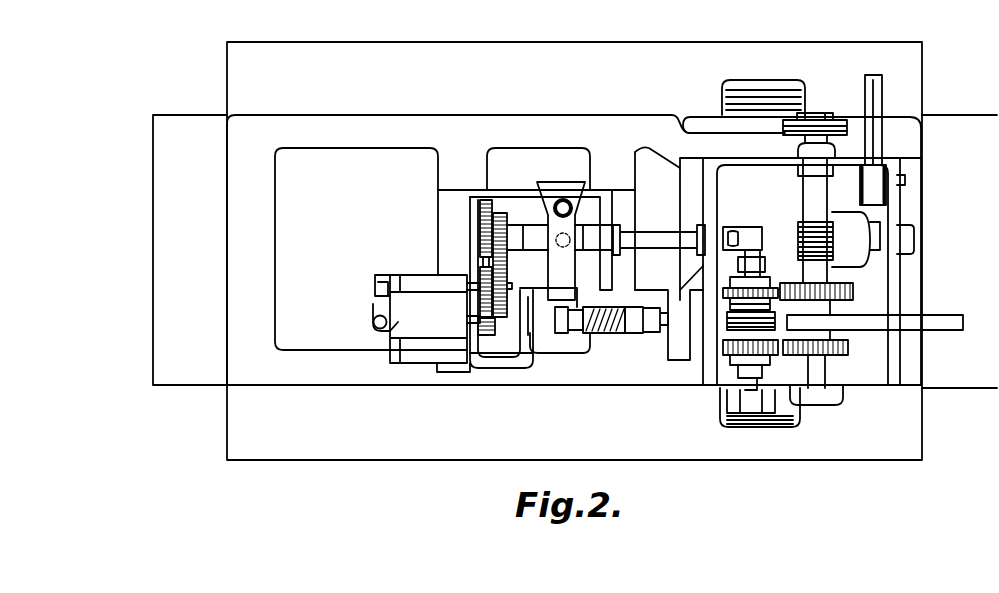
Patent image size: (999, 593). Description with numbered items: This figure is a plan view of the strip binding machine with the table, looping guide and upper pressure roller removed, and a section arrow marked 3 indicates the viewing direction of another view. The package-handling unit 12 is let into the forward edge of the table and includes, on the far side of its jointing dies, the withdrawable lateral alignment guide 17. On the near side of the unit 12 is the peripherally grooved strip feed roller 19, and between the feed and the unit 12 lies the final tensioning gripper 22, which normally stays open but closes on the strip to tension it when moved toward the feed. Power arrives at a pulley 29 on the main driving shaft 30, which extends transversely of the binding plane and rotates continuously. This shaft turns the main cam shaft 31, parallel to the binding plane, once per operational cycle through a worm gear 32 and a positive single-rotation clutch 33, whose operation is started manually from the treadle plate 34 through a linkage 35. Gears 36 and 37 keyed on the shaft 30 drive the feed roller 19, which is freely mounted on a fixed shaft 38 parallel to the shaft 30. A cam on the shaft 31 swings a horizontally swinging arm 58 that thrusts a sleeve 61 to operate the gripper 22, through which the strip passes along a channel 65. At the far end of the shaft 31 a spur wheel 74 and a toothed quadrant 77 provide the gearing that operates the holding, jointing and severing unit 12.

The section line of Fig. 3 is at (120, 243).
The unit 12 is at (404, 309).
The lateral alignment guide 17 is at (374, 319).
The strip feed roller 19 is at (730, 318).
The final tensioning gripper 22 is at (626, 334).
The pulley 29 is at (822, 124).
The main driving shaft 30 is at (808, 190).
The main cam shaft 31 is at (626, 240).
The worm gear 32 is at (833, 257).
The positive single-rotation clutch 33 is at (853, 222).
The treadle plate 34 is at (779, 110).
The linkage 35 is at (882, 94).
The gear 36 is at (853, 297).
The gear 37 is at (846, 348).
The fixed shaft 38 is at (752, 238).
The horizontally swinging arm 58 is at (556, 262).
The sleeve 61 is at (566, 330).
The channel 65 is at (680, 335).
The spur wheel 74 is at (505, 218).
The toothed quadrant 77 is at (484, 208).